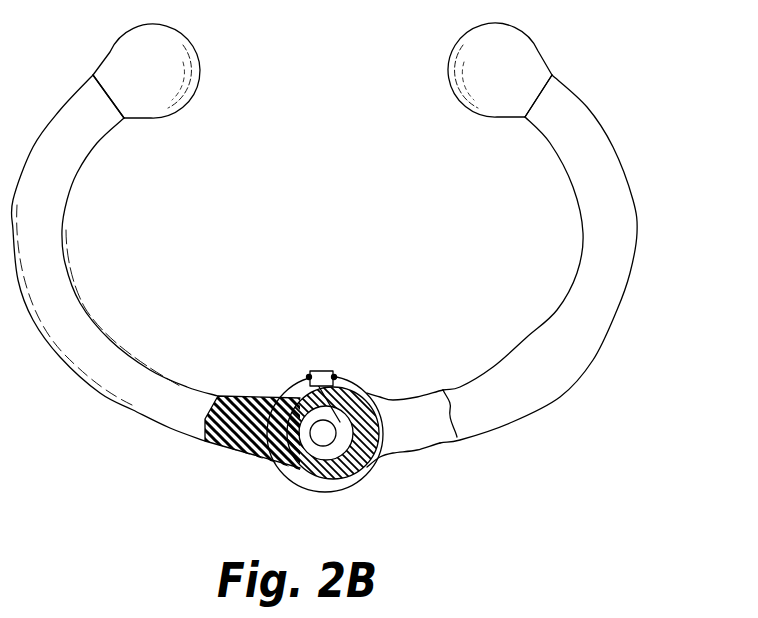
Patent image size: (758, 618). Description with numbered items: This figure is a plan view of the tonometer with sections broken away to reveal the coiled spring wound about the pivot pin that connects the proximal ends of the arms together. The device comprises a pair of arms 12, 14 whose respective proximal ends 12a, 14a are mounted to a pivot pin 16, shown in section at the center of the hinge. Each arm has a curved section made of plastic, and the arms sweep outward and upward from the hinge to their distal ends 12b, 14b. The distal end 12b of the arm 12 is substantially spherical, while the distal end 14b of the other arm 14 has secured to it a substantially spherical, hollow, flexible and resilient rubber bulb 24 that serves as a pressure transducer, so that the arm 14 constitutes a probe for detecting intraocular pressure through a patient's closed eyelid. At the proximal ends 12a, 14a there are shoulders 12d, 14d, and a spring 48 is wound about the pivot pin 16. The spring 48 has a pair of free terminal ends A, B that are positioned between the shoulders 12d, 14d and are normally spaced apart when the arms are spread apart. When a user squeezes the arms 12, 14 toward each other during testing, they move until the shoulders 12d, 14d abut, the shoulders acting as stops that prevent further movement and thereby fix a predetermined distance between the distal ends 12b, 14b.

The arm 12 is at (93, 142).
The proximal end 12a is at (230, 442).
The distal end 12b is at (173, 33).
The shoulder 12d is at (310, 377).
The arm 14 is at (550, 135).
The proximal end 14a is at (425, 437).
The distal end 14b is at (473, 30).
The shoulder 14d is at (333, 377).
The pivot pin 16 is at (323, 440).
The rubber bulb 24 is at (458, 95).
The spring 48 is at (318, 371).
The free terminal end A is at (309, 374).
The free terminal end B is at (334, 374).